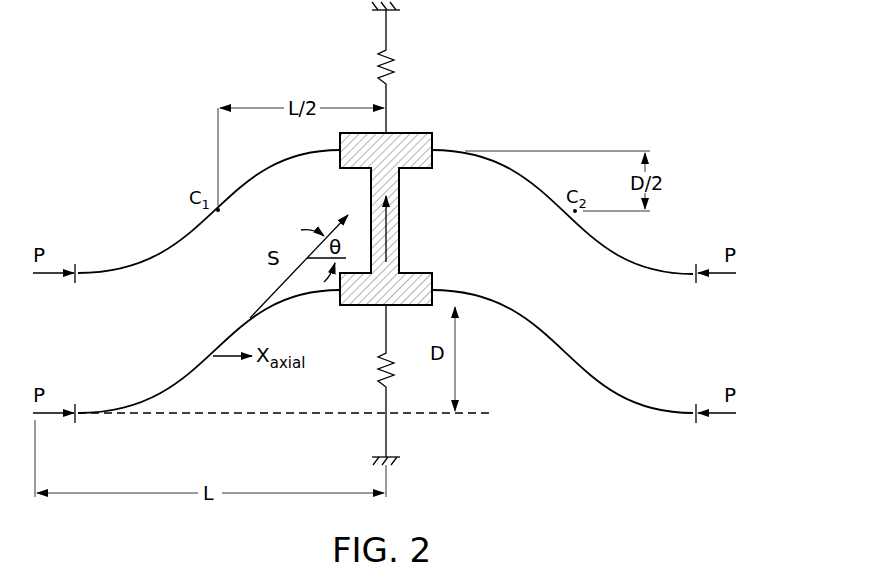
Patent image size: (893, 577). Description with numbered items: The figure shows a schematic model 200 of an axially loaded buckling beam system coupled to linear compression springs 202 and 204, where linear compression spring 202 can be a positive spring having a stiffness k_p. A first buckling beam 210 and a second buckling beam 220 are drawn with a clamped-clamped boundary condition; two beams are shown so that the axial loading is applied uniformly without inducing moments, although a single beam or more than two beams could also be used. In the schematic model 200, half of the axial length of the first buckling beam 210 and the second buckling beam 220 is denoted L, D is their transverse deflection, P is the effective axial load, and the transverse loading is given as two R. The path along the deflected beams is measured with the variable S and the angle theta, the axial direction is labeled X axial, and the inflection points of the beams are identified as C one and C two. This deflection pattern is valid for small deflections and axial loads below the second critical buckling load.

The schematic model 200 is at (533, 109).
The linear compression spring 202 is at (364, 61).
The linear compression spring 204 is at (374, 385).
The first buckling beam 210 is at (129, 266).
The second buckling beam 220 is at (139, 405).